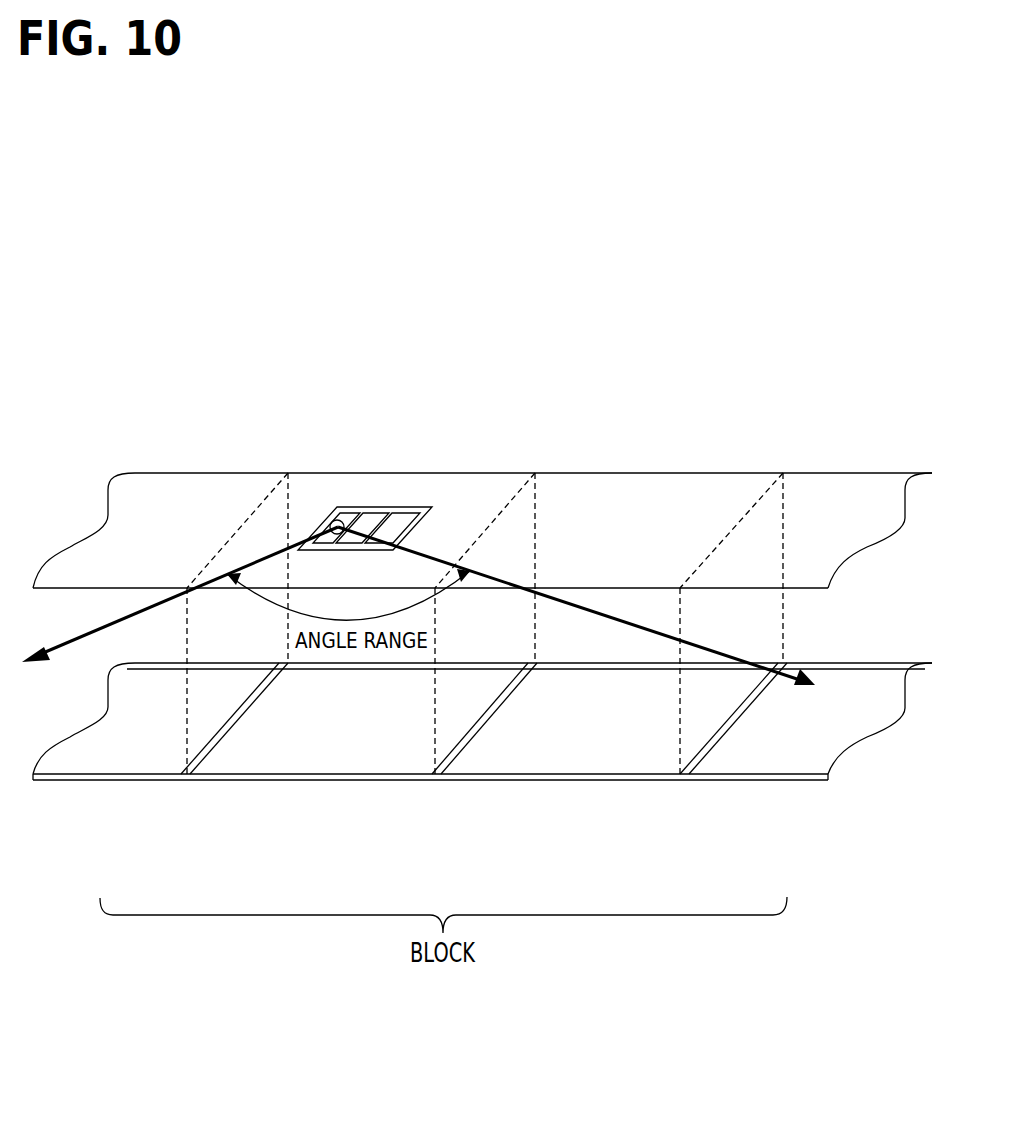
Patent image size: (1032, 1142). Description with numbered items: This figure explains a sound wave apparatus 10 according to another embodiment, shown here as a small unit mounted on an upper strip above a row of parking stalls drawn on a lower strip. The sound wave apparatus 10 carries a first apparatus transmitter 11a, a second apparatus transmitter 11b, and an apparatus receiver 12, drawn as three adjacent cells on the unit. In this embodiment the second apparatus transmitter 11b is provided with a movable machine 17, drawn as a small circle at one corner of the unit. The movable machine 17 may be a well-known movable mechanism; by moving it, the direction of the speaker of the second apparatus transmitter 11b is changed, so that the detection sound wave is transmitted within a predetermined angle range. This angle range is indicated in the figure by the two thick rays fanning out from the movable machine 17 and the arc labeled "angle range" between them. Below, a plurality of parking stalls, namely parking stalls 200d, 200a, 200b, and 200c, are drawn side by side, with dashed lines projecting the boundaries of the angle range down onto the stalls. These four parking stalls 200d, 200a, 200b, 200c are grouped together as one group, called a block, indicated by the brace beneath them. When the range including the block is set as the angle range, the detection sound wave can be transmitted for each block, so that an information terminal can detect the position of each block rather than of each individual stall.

The sound wave apparatus 10 is at (392, 505).
The first apparatus transmitter 11a is at (402, 515).
The second apparatus transmitter 11b is at (348, 513).
The apparatus receiver 12 is at (375, 518).
The movable machine 17 is at (333, 508).
The parking stall 200a is at (297, 750).
The parking stall 200b is at (583, 750).
The parking stall 200c is at (768, 750).
The parking stall 200d is at (112, 750).